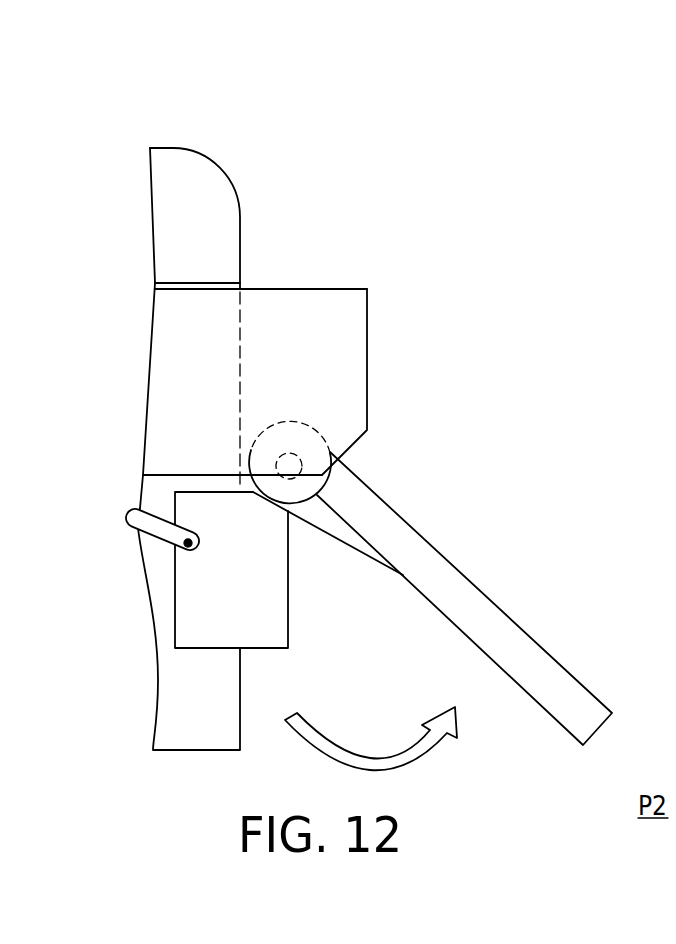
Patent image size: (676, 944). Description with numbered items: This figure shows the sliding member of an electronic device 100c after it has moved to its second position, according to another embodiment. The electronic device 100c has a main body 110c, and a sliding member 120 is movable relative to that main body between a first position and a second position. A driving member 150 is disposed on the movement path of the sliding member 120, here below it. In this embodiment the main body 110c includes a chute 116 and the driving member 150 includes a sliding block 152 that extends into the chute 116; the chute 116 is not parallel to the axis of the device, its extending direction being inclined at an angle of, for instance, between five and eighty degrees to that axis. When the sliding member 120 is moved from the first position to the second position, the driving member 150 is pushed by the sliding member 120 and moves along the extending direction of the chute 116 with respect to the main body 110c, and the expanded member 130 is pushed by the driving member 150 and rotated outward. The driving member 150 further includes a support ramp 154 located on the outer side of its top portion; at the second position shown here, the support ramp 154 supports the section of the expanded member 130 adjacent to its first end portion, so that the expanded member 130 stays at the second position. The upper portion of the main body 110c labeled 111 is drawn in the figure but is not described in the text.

The electronic device 100c is at (155, 110).
The main body 110c is at (177, 698).
The top surface 111 is at (206, 173).
The sliding member 120 is at (353, 318).
The expanded member 130 is at (455, 585).
The driving member 150 is at (265, 632).
The support ramp 154 is at (258, 505).
The chute 116 is at (151, 539).
The sliding block 152 is at (164, 543).